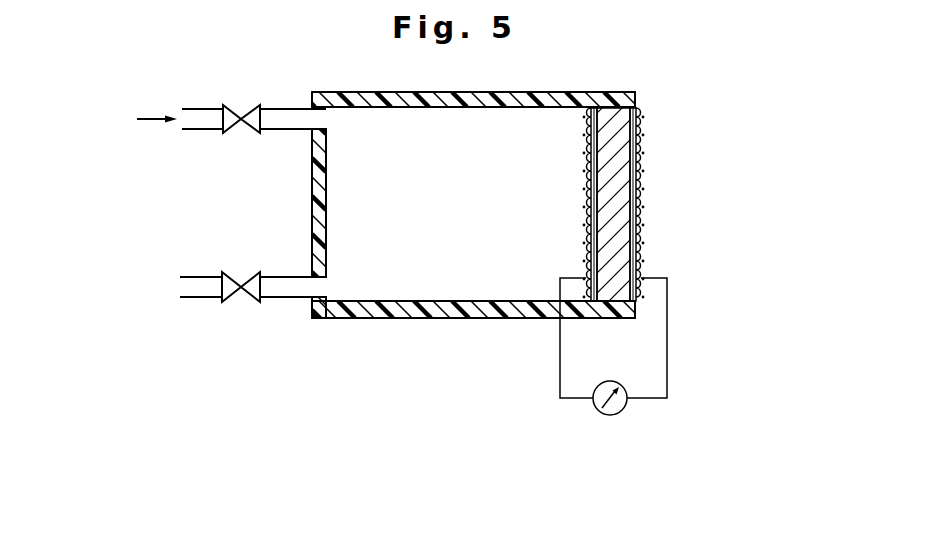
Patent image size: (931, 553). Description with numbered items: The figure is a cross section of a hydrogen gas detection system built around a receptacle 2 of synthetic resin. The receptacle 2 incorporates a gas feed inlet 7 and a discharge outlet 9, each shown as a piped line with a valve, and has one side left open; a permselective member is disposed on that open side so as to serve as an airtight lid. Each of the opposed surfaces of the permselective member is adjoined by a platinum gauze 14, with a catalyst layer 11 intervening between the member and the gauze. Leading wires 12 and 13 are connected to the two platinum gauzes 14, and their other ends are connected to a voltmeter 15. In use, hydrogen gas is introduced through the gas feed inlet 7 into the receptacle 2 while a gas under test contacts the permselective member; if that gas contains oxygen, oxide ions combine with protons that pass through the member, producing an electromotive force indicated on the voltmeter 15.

The measuring chamber / vessel 2 is at (429, 193).
The gas feed inlet 7 is at (278, 120).
The discharge outlet 9 is at (282, 288).
The catalyst layer 11 is at (590, 148).
The leading wire 12 is at (560, 352).
The leading wire 13 is at (667, 354).
The platinum gauze 14 is at (641, 168).
The voltmeter 15 is at (620, 409).